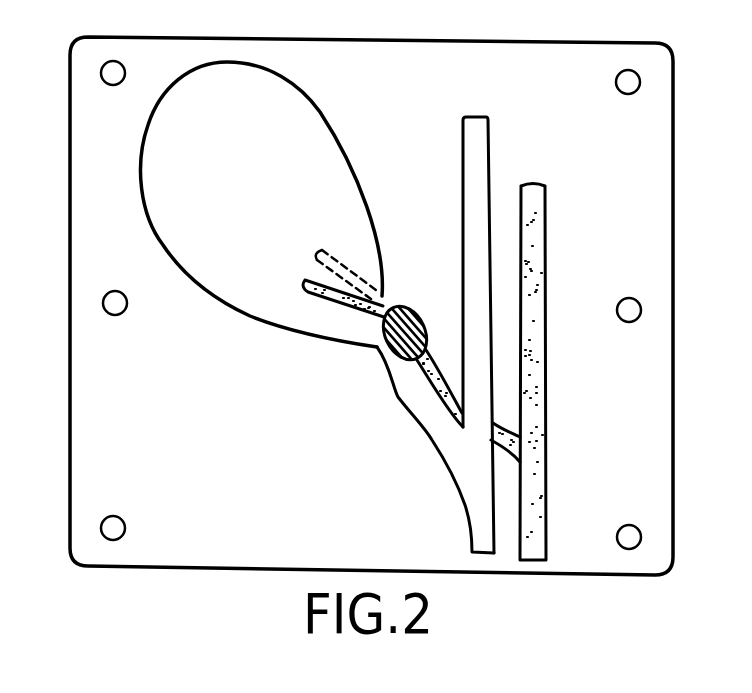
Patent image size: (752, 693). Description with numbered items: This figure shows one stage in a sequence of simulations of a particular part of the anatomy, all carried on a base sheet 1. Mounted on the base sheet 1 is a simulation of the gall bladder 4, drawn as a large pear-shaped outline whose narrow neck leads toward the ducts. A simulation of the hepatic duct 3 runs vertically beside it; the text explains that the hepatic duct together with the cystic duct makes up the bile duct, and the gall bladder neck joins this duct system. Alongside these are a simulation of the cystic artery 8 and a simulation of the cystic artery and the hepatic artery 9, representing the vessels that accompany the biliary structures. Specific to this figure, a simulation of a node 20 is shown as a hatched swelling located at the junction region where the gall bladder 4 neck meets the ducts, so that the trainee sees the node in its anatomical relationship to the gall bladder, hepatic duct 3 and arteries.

The base sheet 1 is at (655, 232).
The simulation of the hepatic duct 3 is at (482, 157).
The simulation of the gall bladder 4 is at (165, 156).
The simulation of the cystic artery 8 is at (413, 410).
The simulation of the cystic artery and the hepatic artery 9 is at (437, 373).
The simulation of a node 20 is at (397, 341).